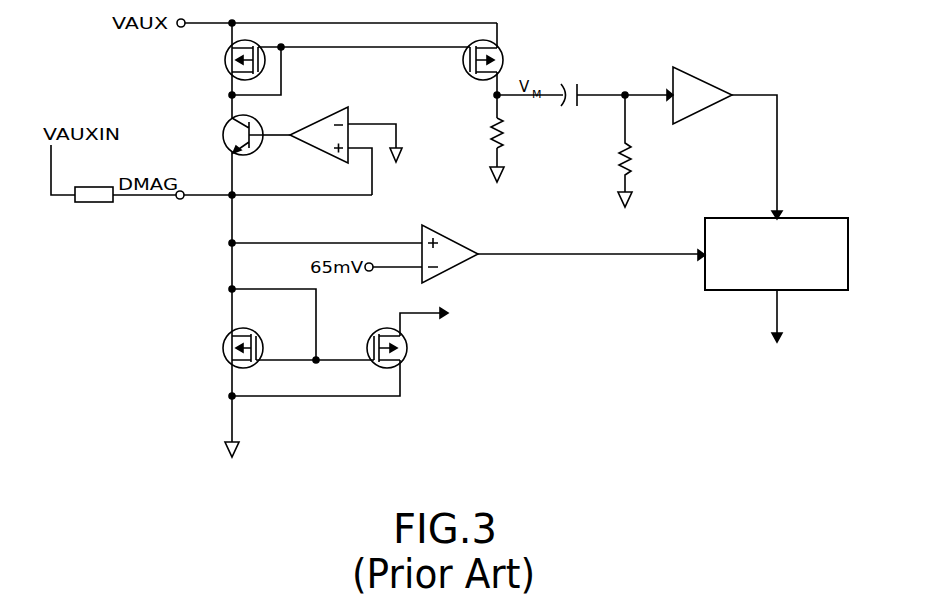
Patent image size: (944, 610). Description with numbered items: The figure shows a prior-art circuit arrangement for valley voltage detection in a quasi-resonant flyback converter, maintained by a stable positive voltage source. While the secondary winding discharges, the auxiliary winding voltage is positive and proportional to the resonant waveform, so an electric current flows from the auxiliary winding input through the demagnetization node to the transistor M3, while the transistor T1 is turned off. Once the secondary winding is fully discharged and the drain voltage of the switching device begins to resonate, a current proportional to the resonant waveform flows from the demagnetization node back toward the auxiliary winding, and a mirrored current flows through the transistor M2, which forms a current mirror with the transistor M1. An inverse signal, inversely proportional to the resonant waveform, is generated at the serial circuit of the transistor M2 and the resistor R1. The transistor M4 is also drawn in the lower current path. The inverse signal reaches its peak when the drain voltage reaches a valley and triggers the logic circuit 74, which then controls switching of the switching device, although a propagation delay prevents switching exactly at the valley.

The logic circuit 74 is at (809, 224).
The transistor M1 is at (240, 60).
The transistor M2 is at (497, 60).
The transistor M3 is at (230, 348).
The transistor M4 is at (398, 348).
The transistor T1 is at (227, 135).
The resistor R1 is at (509, 133).